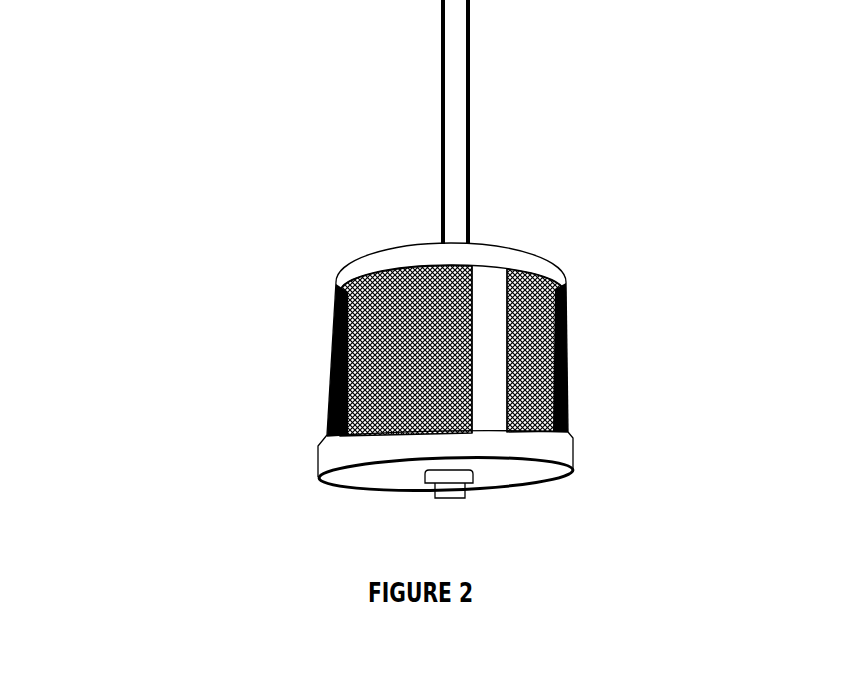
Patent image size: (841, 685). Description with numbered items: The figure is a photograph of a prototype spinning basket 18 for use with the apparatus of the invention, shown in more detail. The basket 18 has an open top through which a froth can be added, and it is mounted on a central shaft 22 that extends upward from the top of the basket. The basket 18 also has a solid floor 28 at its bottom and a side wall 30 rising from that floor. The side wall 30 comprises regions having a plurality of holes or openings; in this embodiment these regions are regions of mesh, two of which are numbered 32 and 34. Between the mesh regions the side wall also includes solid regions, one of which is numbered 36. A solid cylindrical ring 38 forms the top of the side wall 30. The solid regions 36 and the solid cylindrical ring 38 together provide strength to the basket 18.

The basket 18 is at (347, 273).
The shaft 22 is at (453, 88).
The solid floor 28 is at (365, 482).
The side wall 30 is at (330, 362).
The region of mesh 32 is at (327, 401).
The region of mesh 34 is at (568, 385).
The solid region 36 is at (482, 332).
The solid cylindrical ring 38 is at (552, 277).